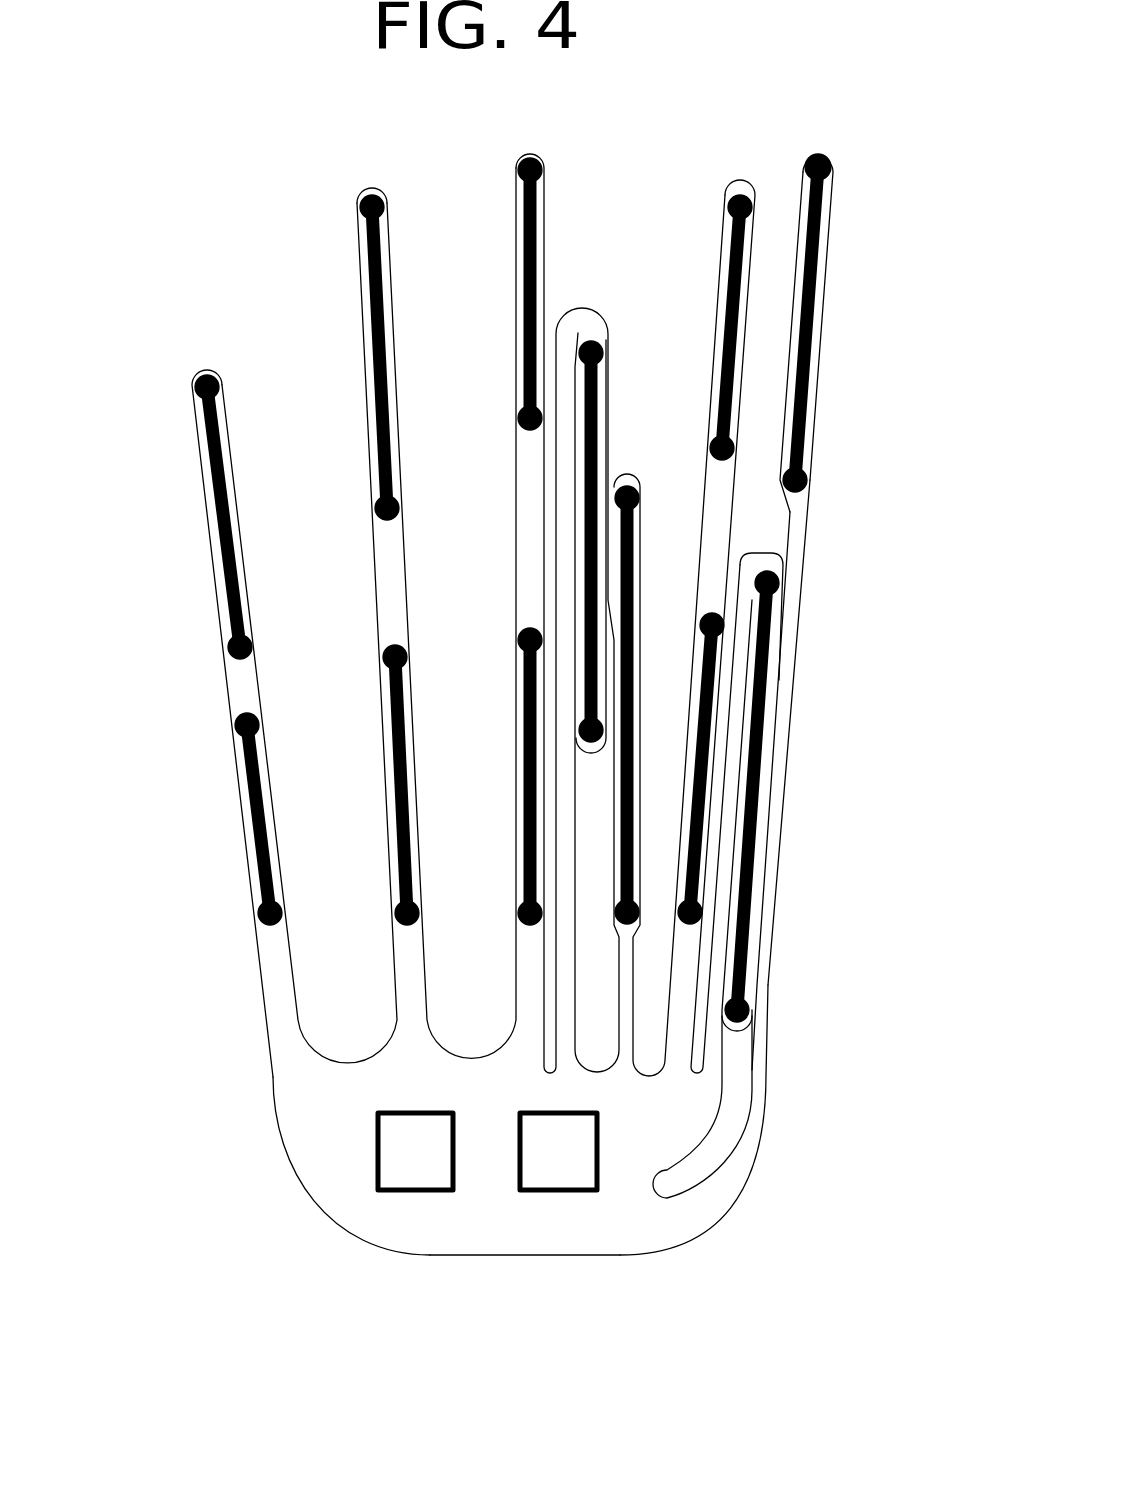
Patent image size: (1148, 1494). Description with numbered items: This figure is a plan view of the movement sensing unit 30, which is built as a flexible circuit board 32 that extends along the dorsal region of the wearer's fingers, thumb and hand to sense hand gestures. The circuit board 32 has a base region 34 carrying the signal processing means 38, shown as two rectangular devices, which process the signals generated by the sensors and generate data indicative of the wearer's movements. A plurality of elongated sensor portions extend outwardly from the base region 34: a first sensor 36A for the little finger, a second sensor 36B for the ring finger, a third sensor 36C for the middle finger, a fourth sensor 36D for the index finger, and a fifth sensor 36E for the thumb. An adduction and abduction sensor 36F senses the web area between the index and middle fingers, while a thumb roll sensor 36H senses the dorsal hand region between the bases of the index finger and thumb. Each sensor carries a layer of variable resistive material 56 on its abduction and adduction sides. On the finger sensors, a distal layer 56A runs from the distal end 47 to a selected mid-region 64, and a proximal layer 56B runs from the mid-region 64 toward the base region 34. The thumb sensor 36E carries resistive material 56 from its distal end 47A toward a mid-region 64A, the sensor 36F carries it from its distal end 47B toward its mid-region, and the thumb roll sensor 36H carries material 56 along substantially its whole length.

The movement sensing unit 30 is at (203, 1123).
The flexible circuit board 32 is at (348, 1230).
The base region 34 is at (320, 1152).
The first sensor 36A is at (211, 545).
The second sensor 36B is at (370, 393).
The third sensor 36C is at (518, 328).
The fourth sensor 36D is at (725, 253).
The fifth sensor 36E is at (785, 800).
The adduction and abduction sensor 36F is at (750, 968).
The thumb roll sensor 36H is at (618, 1007).
The signal processing means 38 is at (555, 1200).
The distal end 47 is at (370, 190).
The distal end 47A is at (823, 157).
The distal end 47B is at (738, 1027).
The variable resistive material 56 is at (599, 415).
The distal layer of resistive material 56A is at (371, 318).
The proximal layer of resistive material 56B is at (525, 770).
The mid-region 64 is at (390, 625).
The mid-region 64A is at (806, 540).